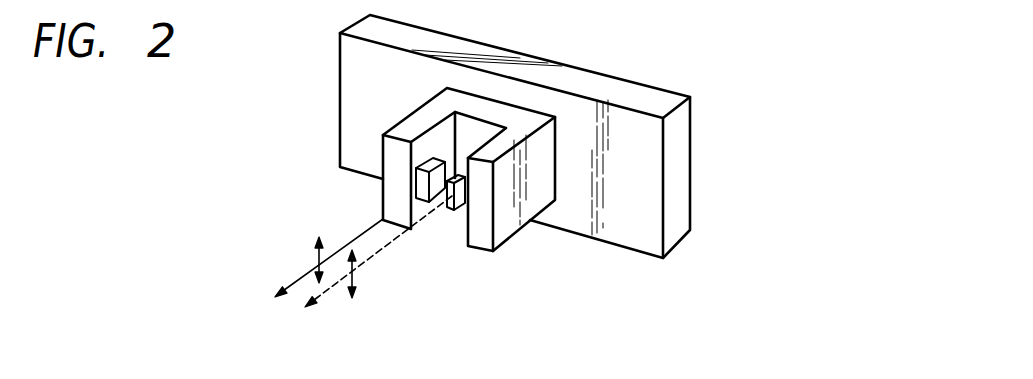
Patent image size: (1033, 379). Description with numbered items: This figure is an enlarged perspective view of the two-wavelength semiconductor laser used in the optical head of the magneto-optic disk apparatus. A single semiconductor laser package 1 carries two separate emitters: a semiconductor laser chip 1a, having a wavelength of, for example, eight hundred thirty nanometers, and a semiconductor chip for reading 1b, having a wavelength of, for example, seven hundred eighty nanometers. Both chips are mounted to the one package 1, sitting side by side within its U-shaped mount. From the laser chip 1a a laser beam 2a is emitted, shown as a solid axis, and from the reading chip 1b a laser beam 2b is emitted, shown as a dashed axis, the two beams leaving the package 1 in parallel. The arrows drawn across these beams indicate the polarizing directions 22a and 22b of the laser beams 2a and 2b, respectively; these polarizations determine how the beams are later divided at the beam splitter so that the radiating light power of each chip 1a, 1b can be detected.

The semiconductor laser package 1 is at (656, 93).
The semiconductor laser chip 1a is at (416, 186).
The semiconductor chip for reading 1b is at (452, 212).
The laser beam 2a is at (290, 282).
The laser beam 2b is at (322, 297).
The polarizing direction 22a is at (319, 253).
The polarizing direction 22b is at (355, 278).